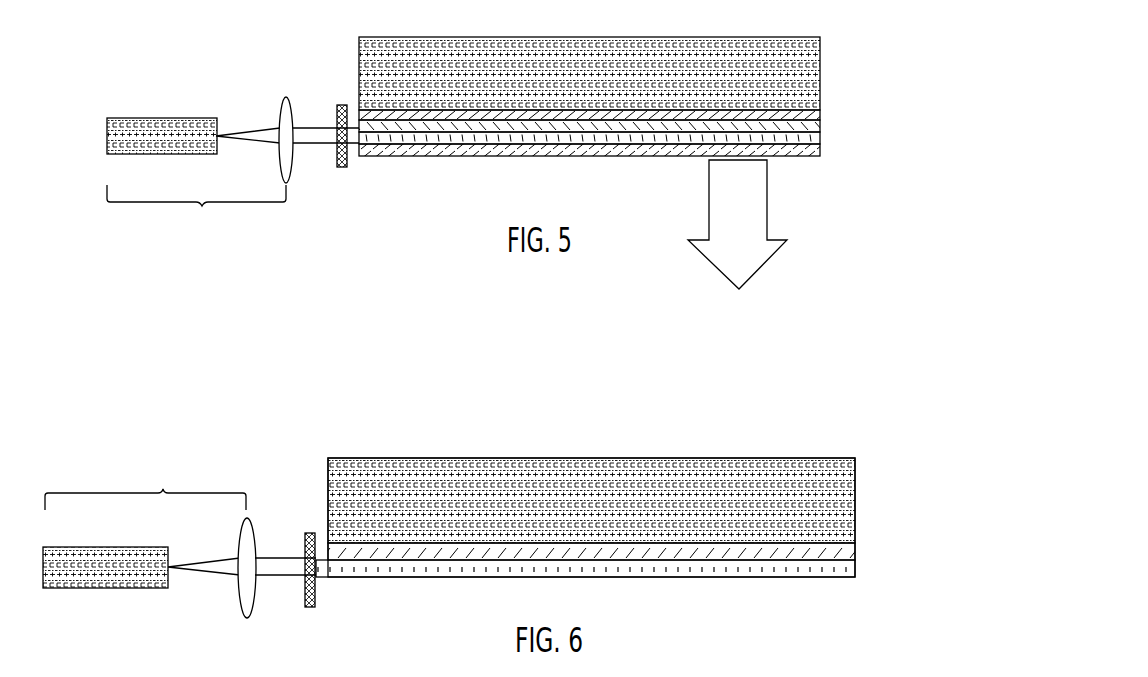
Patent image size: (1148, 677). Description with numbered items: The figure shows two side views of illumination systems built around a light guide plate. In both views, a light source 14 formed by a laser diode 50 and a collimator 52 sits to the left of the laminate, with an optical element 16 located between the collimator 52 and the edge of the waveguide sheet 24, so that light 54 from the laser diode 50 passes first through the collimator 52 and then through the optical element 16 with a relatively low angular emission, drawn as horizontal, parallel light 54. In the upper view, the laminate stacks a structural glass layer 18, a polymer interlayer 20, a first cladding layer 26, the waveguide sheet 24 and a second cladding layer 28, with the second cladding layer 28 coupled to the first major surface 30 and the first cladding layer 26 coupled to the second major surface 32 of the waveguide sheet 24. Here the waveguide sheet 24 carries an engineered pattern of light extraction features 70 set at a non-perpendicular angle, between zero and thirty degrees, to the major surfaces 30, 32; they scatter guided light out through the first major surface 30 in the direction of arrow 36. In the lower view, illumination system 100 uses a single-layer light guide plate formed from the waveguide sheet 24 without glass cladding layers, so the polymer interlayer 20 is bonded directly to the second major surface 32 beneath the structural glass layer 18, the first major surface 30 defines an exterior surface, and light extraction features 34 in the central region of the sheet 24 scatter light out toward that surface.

In FIG. 5, the light source 14 is at (196, 215).
In FIG. 6, the light source 14 is at (145, 482).
In FIG. 5, the optical element 16 is at (342, 105).
In FIG. 6, the optical element 16 is at (310, 607).
In FIG. 5, the structural glass layer 18 is at (822, 60).
In FIG. 6, the structural glass layer 18 is at (848, 462).
In FIG. 5, the polymer interlayer 20 is at (822, 115).
In FIG. 6, the polymer interlayer 20 is at (848, 553).
In FIG. 5, the waveguide sheet 24 is at (822, 140).
In FIG. 6, the waveguide sheet 24 is at (846, 568).
In FIG. 5, the first cladding layer 26 is at (822, 124).
In FIG. 5, the second cladding layer 28 is at (822, 150).
In FIG. 6, the first major surface 30 is at (740, 582).
In FIG. 6, the second major surface 32 is at (648, 550).
In FIG. 6, the light extraction features 34 is at (477, 571).
In FIG. 5, the arrow 36 is at (756, 270).
In FIG. 5, the laser diode 50 is at (187, 116).
In FIG. 6, the laser diode 50 is at (142, 580).
In FIG. 5, the collimator 52 is at (287, 96).
In FIG. 6, the collimator 52 is at (248, 618).
In FIG. 6, the light 54 is at (275, 557).
In FIG. 5, the light extraction features 70 is at (409, 134).
In FIG. 6, the illumination system 100 is at (862, 412).